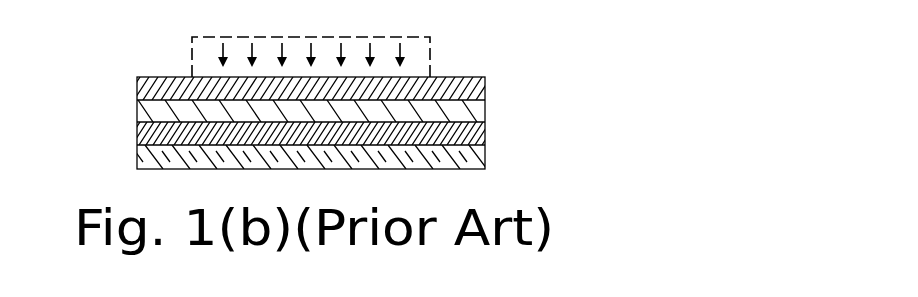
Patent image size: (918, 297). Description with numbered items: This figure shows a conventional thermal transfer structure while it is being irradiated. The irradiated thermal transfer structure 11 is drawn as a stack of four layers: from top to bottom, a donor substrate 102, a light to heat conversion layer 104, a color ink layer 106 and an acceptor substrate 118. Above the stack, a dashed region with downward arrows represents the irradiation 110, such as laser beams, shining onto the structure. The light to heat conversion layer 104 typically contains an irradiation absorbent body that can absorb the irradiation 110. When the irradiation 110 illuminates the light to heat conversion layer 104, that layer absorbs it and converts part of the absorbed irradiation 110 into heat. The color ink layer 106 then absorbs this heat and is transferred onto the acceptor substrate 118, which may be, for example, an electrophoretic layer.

The irradiated thermal transfer structure 11 is at (82, 147).
The donor substrate 102 is at (486, 88).
The light to heat conversion layer 104 is at (486, 110).
The color ink layer 106 is at (486, 131).
The acceptor substrate 118 is at (486, 155).
The irradiation 110 is at (430, 52).